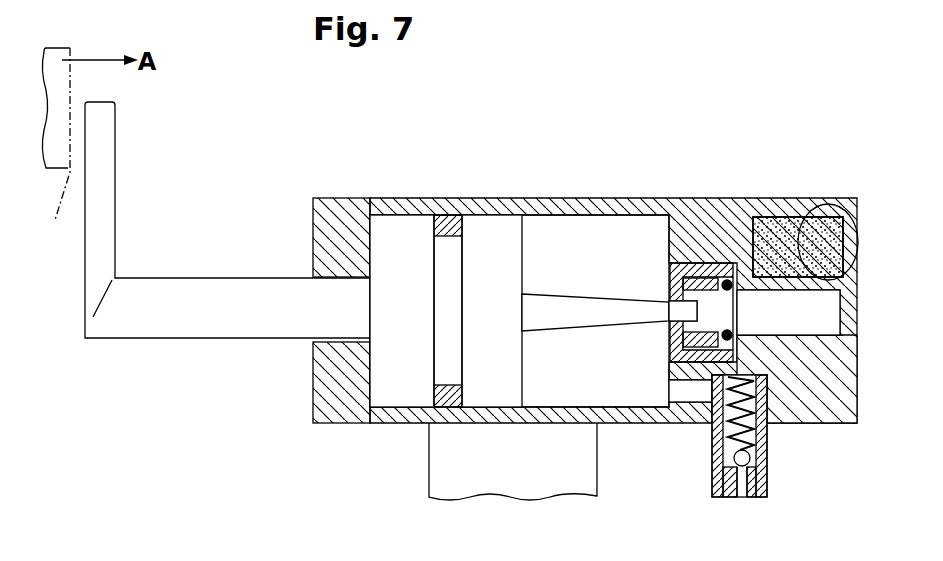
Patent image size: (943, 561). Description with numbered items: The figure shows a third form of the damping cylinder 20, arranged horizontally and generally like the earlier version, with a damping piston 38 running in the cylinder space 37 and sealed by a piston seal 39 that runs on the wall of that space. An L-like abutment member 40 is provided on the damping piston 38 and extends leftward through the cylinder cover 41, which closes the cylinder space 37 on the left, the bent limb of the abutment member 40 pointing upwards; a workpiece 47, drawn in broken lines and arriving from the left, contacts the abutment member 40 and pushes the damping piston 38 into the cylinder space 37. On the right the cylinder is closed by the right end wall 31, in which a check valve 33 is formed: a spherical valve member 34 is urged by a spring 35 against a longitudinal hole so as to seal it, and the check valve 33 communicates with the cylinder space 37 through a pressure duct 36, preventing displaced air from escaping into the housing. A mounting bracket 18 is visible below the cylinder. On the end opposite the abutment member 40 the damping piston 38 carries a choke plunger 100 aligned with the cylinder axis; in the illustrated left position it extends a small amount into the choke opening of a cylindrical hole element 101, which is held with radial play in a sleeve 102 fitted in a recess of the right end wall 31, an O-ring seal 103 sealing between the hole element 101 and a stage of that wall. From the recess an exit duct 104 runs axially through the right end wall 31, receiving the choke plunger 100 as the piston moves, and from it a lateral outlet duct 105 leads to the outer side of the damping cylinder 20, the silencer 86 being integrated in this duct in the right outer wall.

The bracket 18 is at (450, 462).
The damping cylinder 20 is at (640, 203).
The right end wall 31 is at (818, 370).
The check valve 33 is at (782, 440).
The spherical valve member 34 is at (767, 470).
The spring 35 is at (735, 432).
The pressure duct 36 is at (677, 393).
The cylinder space 37 is at (593, 227).
The damping piston 38 is at (493, 232).
The piston seal 39 is at (449, 213).
The abutment member 40 is at (180, 292).
The cylinder cover 41 is at (323, 386).
The workpiece 47 is at (54, 150).
The silencer 86 is at (762, 222).
The choke plunger 100 is at (553, 310).
The hole element 101 is at (685, 270).
The sleeve 102 is at (672, 357).
The O-ring seal 103 is at (726, 282).
The exit duct 104 is at (764, 325).
The lateral outlet duct 105 is at (807, 206).